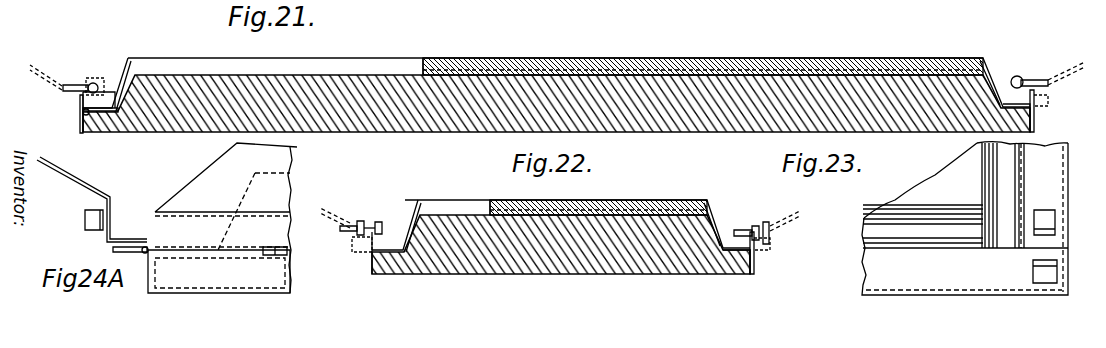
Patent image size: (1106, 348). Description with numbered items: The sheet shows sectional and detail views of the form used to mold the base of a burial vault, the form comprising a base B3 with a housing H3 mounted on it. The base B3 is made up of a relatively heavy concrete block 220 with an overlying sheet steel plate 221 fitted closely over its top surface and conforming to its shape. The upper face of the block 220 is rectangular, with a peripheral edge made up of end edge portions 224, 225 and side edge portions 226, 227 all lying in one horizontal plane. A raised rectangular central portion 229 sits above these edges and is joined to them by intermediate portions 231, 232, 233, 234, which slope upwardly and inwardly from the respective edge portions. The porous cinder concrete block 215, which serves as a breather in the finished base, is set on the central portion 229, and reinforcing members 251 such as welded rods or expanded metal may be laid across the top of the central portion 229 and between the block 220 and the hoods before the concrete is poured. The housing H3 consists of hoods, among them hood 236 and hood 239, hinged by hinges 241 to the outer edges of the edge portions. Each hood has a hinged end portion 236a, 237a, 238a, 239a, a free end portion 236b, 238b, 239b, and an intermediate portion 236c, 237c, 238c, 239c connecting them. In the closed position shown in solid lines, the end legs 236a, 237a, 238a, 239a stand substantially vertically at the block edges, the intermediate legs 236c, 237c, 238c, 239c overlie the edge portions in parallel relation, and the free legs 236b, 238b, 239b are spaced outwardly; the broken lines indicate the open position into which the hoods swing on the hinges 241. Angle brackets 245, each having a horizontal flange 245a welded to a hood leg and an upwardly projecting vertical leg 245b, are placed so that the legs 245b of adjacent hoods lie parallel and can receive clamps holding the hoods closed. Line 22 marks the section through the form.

In FIG. 21, the sectional view line 22— 22 is at (548, 21).
In FIG. 21, the cinder concrete block 215 is at (573, 60).
In FIG. 21, the block 220 is at (645, 125).
In FIG. 21, the plate 221 is at (122, 128).
In FIG. 21, the end edge portion 224 is at (90, 127).
In FIG. 21, the end edge portion 225 is at (1032, 123).
In FIG. 22, the side edge portion 226 is at (373, 256).
In FIG. 22, the side edge portion 227 is at (754, 258).
In FIG. 21, the central portion 229 is at (380, 75).
In FIG. 21, the intermediate portion 231 is at (128, 78).
In FIG. 21, the intermediate portion 232 is at (1020, 75).
In FIG. 22, the intermediate portion 233 is at (415, 205).
In FIG. 22, the intermediate portion 234 is at (717, 225).
In FIG. 21, the hood 236 is at (110, 72).
In FIG. 24A, the hood 236 is at (72, 181).
In FIG. 21, the end portion 236a is at (82, 95).
In FIG. 24A, the end portion 236a is at (127, 240).
In FIG. 21, the free end portion 236b is at (123, 75).
In FIG. 21, the intermediate portion 236c is at (75, 78).
In FIG. 24A, the intermediate portion 236c is at (103, 235).
In FIG. 22, the end portion 237a is at (368, 247).
In FIG. 22, the intermediate portion 237c is at (378, 222).
In FIG. 21, the end portion 238a is at (1034, 105).
In FIG. 21, the free end portion 238b is at (1010, 33).
In FIG. 22, the free end portion 238b is at (405, 212).
In FIG. 21, the intermediate portion 238c is at (1027, 83).
In FIG. 24A, the hood 239 is at (207, 212).
In FIG. 22, the end portion 239a is at (754, 236).
In FIG. 22, the free end portion 239b is at (715, 208).
In FIG. 22, the intermediate portion 239c is at (742, 226).
In FIG. 21, the hinge 241 is at (85, 112).
In FIG. 24A, the hinge 241 is at (147, 250).
In FIG. 23, the bracket 245 is at (1035, 228).
In FIG. 24A, the bracket 245 is at (83, 218).
In FIG. 23, the flange 245a is at (1043, 210).
In FIG. 23, the leg 245b is at (1043, 235).
In FIG. 22, the reinforcing member 251 is at (655, 213).
In FIG. 21, the base B3 is at (423, 120).
In FIG. 21, the housing H3 is at (117, 72).